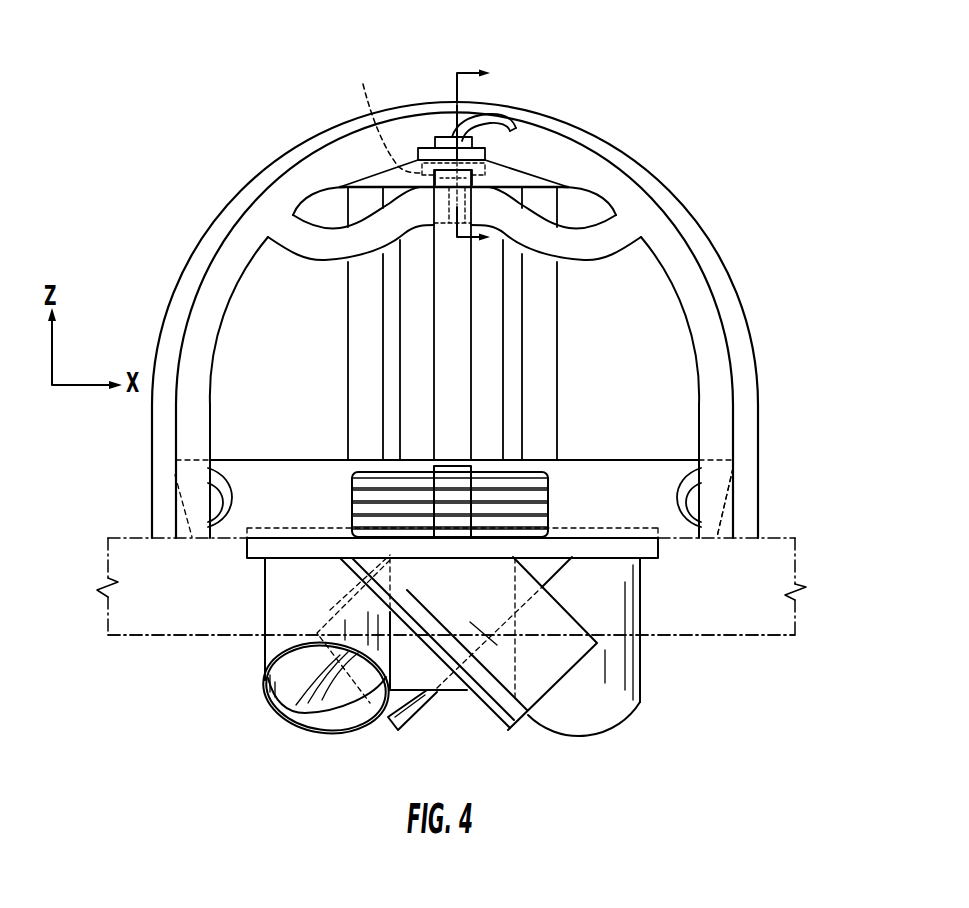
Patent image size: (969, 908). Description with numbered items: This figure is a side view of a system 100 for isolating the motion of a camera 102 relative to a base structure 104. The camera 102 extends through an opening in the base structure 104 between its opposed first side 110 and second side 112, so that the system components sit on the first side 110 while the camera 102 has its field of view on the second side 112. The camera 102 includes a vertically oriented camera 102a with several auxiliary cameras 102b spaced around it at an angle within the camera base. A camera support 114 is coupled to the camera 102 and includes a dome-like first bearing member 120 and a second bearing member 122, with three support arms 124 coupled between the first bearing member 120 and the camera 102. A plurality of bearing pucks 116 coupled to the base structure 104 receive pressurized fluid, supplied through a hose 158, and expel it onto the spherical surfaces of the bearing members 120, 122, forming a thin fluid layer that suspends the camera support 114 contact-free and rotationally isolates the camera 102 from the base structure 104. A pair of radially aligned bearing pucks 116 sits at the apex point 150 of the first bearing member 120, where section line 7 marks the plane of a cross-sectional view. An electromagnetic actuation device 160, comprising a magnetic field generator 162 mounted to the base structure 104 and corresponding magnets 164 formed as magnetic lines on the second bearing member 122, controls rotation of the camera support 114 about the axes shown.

The system 100 is at (198, 125).
The camera 102 is at (265, 730).
The vertically oriented camera 102a is at (447, 692).
The auxiliary camera 102b is at (320, 733).
The base structure 104 is at (98, 548).
The first side 110 is at (132, 538).
The second side 112 is at (162, 637).
The camera support 114 is at (340, 326).
The bearing puck 116 is at (432, 141).
The first bearing member 120 is at (356, 168).
The second bearing member 122 is at (666, 513).
The support arm 124 is at (363, 398).
The apex point 150 is at (454, 146).
The hose 158 is at (504, 116).
The electromagnetic actuation device 160 is at (346, 508).
The magnetic field generator 162 is at (455, 512).
The magnet 164 is at (553, 472).
The section line 7- 7 is at (478, 157).